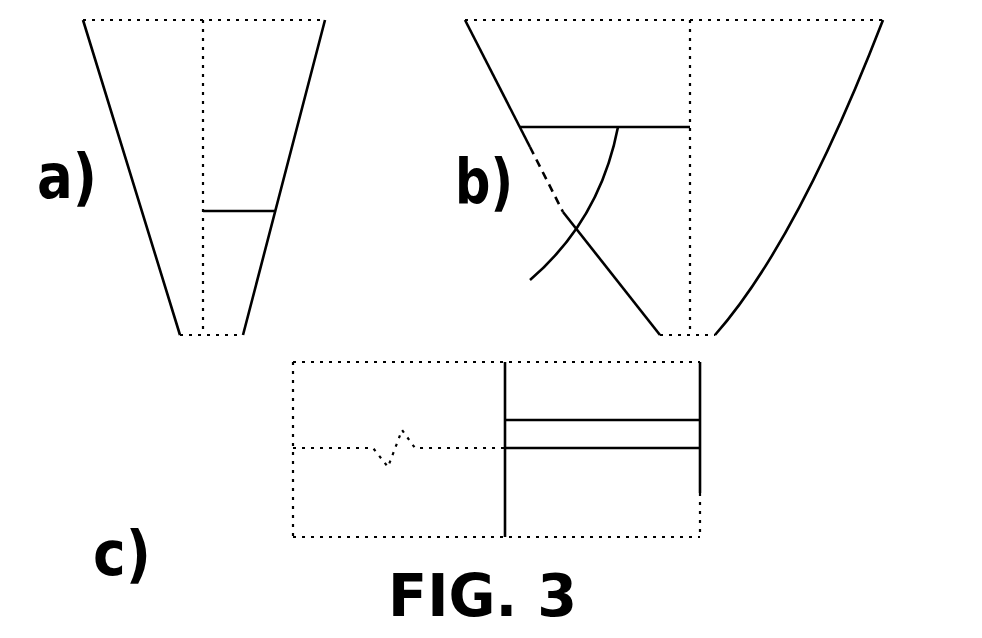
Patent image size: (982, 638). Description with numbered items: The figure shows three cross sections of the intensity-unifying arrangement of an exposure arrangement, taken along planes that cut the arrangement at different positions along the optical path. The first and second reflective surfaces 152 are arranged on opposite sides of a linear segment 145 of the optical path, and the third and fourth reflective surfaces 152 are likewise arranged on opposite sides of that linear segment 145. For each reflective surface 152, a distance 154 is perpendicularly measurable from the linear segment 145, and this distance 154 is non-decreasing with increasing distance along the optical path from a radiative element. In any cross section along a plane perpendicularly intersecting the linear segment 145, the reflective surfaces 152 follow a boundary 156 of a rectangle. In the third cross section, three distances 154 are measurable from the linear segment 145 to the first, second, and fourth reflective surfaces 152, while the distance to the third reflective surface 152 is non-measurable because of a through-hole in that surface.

The reflective surface 152 is at (143, 77).
The linear segment 145 is at (203, 98).
The distance 154 is at (250, 211).
The boundary of a rectangle 156 is at (668, 537).